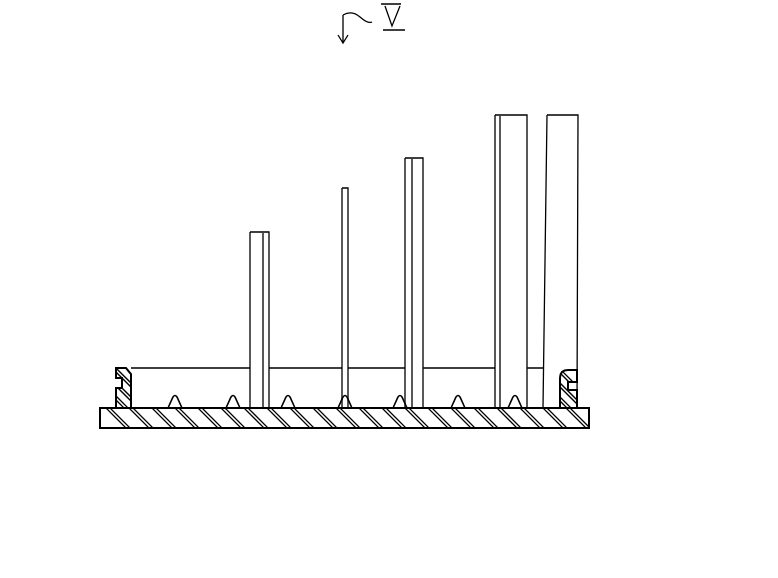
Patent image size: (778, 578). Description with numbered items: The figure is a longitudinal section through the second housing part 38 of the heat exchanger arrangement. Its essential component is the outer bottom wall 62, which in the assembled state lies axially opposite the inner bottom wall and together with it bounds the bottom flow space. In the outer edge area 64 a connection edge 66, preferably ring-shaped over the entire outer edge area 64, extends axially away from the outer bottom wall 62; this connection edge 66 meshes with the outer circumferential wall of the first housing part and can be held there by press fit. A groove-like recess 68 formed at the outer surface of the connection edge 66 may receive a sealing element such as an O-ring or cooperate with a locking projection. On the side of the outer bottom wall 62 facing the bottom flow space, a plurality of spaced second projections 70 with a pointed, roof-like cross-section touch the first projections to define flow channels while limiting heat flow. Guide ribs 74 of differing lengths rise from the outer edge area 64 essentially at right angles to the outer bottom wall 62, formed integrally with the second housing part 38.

The second housing part 38 is at (120, 126).
The outer bottom wall 62 is at (502, 429).
The outer edge area 64 is at (112, 430).
The connection edge 66 is at (135, 367).
The groove-like recess 68 is at (577, 386).
The second projections 70 is at (177, 396).
The guide ribs 74 is at (272, 250).